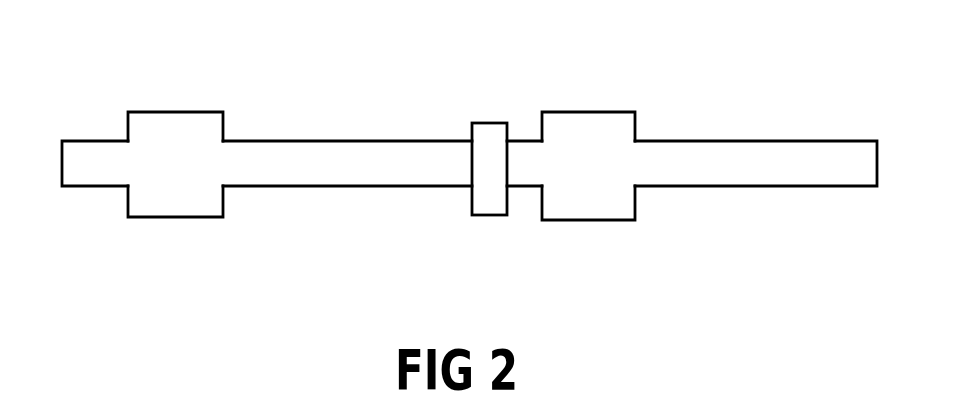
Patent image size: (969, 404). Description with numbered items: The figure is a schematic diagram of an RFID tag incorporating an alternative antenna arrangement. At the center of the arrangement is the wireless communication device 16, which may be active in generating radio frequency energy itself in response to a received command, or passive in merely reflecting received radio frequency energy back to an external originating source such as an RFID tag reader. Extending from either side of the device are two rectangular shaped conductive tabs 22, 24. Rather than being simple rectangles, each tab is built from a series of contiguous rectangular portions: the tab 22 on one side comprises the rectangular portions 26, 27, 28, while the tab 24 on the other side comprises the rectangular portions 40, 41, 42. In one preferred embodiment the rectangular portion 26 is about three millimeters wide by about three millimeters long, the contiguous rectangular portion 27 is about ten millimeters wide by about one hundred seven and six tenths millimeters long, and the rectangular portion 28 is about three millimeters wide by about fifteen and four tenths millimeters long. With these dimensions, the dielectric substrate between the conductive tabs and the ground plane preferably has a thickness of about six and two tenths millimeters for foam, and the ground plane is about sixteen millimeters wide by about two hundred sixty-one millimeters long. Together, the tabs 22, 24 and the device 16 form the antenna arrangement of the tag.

The conductive tab 22 is at (257, 130).
The conductive tab 24 is at (700, 133).
The wireless communication device 16 is at (490, 169).
The rectangular portion 26 is at (95, 163).
The contiguous rectangular portion 27 is at (175, 164).
The rectangular portion 28 is at (347, 163).
The rectangular portion 40 is at (526, 163).
The rectangular portion 41 is at (588, 166).
The rectangular portion 42 is at (756, 163).